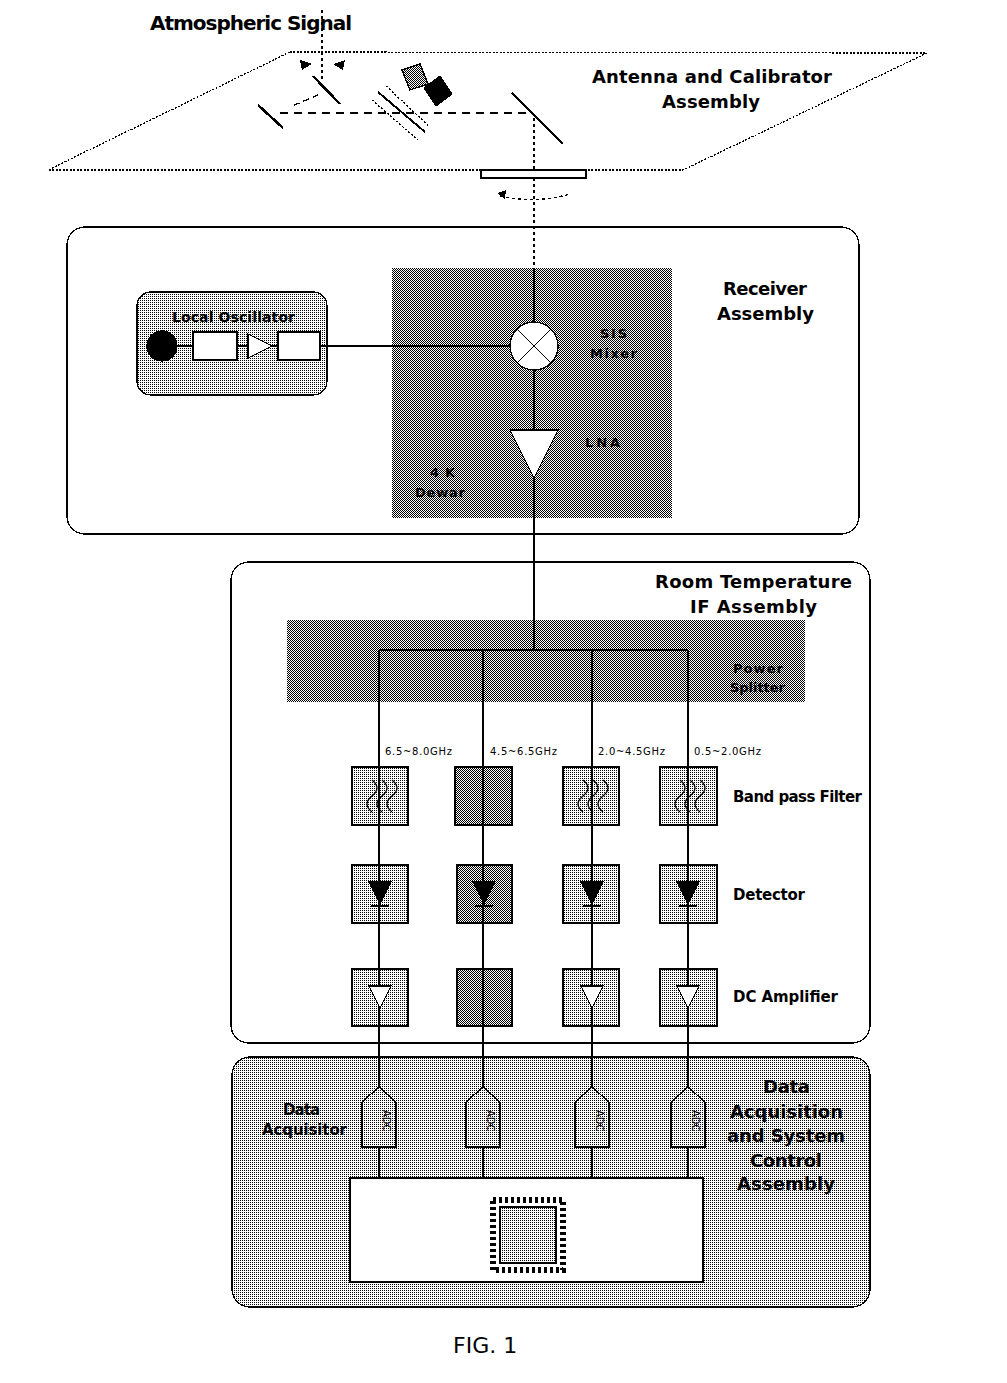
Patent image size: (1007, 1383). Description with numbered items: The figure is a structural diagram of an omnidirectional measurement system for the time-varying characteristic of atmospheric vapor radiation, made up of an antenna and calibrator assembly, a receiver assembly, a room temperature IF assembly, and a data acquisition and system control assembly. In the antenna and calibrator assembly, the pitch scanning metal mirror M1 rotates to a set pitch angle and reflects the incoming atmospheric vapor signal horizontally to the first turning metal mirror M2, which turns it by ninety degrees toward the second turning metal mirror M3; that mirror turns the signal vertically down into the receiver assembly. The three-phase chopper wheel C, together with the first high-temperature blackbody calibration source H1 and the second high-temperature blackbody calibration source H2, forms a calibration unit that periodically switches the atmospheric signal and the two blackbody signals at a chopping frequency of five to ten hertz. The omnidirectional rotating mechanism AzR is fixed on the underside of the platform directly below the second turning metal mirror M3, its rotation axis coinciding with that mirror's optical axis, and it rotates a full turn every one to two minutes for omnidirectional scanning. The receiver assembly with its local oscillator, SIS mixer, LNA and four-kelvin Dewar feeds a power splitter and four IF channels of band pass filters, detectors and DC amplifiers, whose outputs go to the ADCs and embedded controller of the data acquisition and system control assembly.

The pitch scanning metal mirror M1 is at (323, 91).
The first turning metal mirror M2 is at (266, 122).
The second turning metal mirror M3 is at (539, 118).
The first high-temperature blackbody calibration source H1 is at (404, 75).
The second high-temperature blackbody calibration source H2 is at (447, 88).
The three-phase chopper wheel C is at (401, 113).
The omnidirectional rotating mechanism AzR is at (518, 185).